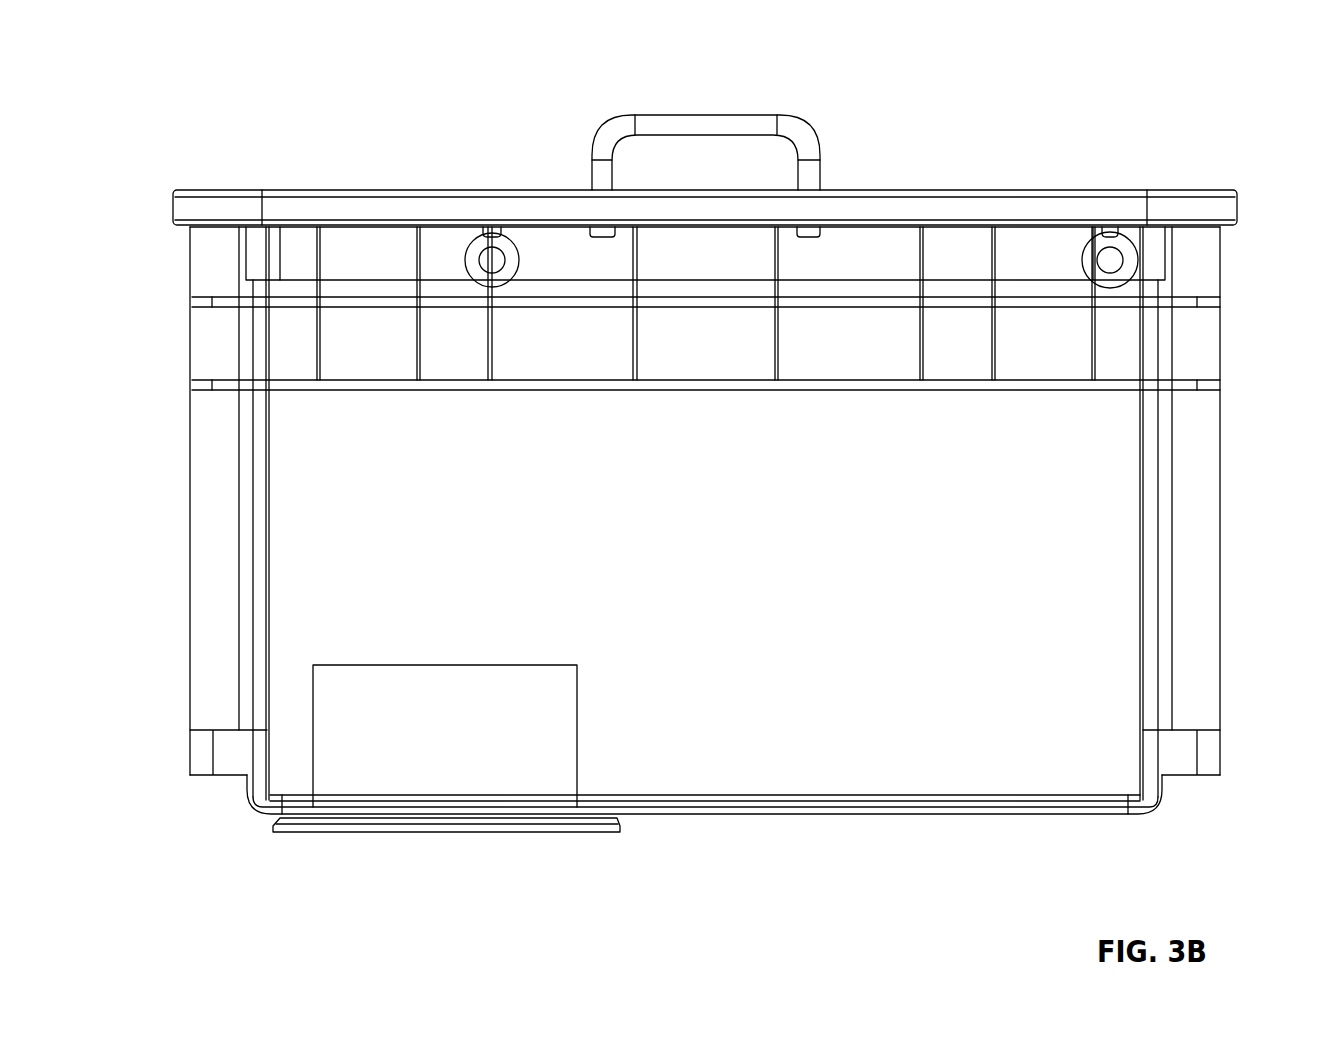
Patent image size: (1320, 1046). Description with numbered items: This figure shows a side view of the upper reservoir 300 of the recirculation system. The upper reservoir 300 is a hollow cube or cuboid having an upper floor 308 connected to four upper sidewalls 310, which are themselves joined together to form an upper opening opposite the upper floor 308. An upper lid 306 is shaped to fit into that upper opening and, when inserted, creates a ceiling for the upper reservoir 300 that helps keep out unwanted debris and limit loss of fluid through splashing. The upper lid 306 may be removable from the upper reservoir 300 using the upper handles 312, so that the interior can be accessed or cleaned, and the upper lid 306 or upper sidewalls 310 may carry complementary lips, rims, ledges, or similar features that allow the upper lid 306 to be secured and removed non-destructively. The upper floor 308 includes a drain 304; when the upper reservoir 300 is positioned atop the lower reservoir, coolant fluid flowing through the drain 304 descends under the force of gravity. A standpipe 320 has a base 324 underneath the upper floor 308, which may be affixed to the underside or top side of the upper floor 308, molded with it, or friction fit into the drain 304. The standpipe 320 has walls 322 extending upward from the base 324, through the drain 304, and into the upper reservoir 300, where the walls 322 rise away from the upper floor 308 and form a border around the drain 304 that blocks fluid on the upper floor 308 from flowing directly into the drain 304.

The upper reservoir 300 is at (185, 74).
The drain 304 is at (466, 850).
The upper lid 306 is at (300, 205).
The upper floor 308 is at (963, 800).
The upper sidewalls 310 is at (190, 553).
The upper handles 312 is at (790, 135).
The standpipe 320 is at (285, 702).
The walls 322 is at (563, 757).
The base 324 is at (583, 835).